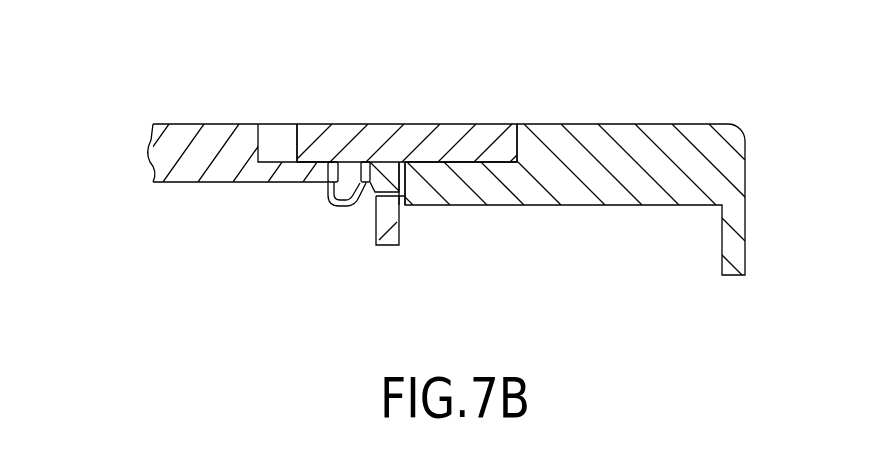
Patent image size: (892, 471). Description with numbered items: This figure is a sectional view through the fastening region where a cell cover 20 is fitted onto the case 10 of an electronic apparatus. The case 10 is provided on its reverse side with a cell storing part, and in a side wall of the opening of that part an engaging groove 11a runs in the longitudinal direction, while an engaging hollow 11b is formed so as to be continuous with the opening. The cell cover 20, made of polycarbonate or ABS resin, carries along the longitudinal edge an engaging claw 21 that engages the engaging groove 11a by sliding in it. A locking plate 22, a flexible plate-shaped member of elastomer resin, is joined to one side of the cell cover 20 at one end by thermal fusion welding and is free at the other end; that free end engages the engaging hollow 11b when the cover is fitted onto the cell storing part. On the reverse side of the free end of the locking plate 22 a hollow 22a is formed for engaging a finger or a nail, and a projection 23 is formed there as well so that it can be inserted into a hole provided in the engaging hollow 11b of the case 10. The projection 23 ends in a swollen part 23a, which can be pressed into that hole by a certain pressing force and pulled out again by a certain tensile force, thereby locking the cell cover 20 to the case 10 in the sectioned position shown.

The case 10 is at (165, 147).
The engaging groove 11a is at (372, 203).
The engaging hollow 11b is at (272, 133).
The cell cover 20 is at (678, 135).
The engaging claw 21 is at (400, 197).
The locking plate 22 is at (442, 143).
The hollow 22a is at (319, 156).
The projection 23 is at (314, 202).
The swollen part 23a is at (343, 207).